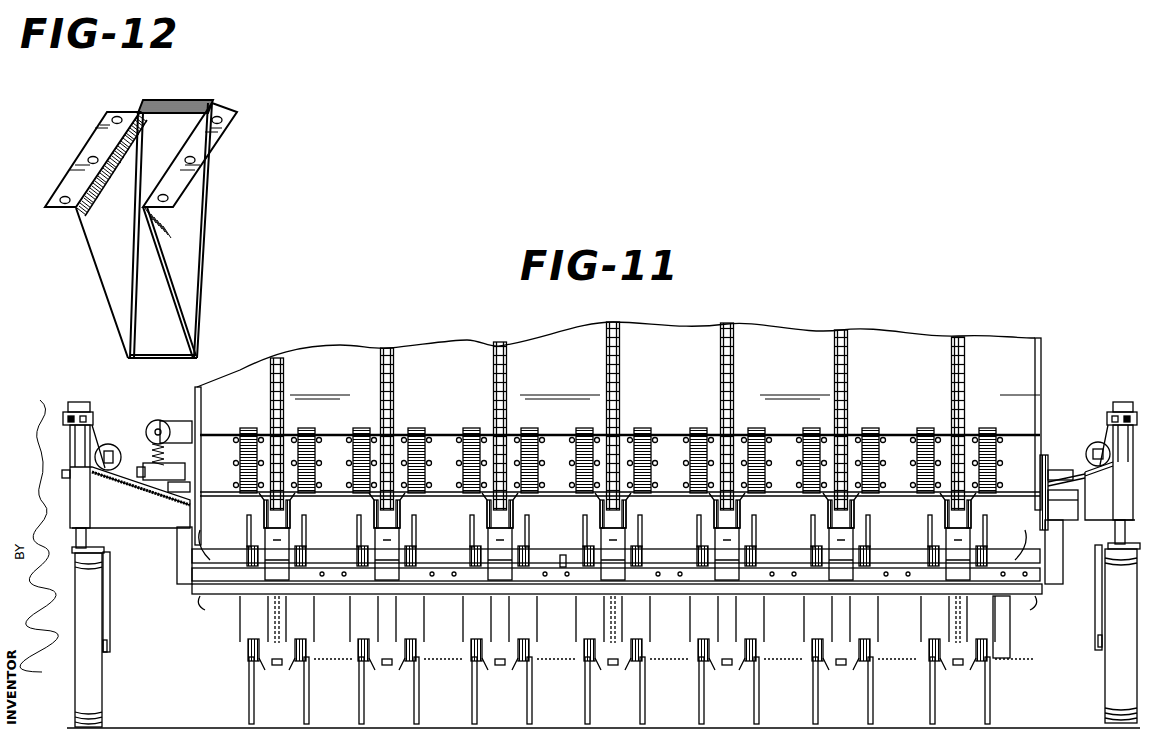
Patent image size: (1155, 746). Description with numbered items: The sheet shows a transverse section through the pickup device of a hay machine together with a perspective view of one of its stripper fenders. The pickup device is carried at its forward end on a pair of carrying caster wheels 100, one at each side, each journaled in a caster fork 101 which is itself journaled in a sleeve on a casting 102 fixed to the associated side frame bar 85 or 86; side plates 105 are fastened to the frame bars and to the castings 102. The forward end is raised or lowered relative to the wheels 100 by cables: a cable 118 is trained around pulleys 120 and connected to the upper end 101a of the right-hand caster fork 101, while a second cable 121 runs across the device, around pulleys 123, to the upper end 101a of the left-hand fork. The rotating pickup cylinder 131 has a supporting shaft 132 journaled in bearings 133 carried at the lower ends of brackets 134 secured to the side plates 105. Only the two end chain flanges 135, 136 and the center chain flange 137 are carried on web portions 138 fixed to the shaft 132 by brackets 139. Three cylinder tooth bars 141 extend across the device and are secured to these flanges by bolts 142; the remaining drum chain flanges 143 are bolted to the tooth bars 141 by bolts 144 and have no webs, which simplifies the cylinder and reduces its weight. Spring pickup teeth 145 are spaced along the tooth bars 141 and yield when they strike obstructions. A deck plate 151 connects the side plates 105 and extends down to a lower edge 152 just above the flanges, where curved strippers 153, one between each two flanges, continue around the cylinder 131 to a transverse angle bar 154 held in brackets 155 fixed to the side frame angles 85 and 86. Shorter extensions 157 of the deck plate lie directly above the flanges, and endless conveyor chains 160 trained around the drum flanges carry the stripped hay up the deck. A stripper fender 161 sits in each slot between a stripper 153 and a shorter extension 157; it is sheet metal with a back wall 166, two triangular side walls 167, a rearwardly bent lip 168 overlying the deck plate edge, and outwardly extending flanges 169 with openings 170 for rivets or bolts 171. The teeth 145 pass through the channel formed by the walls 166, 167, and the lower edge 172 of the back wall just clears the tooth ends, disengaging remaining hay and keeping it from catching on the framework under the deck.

In FIG. 11, the side frame bar 85 is at (1040, 470).
In FIG. 11, the side frame bar 86 is at (188, 468).
In FIG. 11, the carrying caster wheel 100 is at (100, 675).
In FIG. 11, the caster fork 101 is at (110, 606).
In FIG. 11, the upper end of caster fork 101a is at (85, 408).
In FIG. 11, the casting 102 is at (128, 518).
In FIG. 11, the side plate 105 is at (200, 400).
In FIG. 11, the cable 118 is at (135, 478).
In FIG. 11, the pulley 120 is at (105, 446).
In FIG. 11, the second cable 121 is at (1090, 470).
In FIG. 11, the pulley 123 is at (1097, 441).
In FIG. 11, the pickup cylinder 131 is at (1008, 670).
In FIG. 11, the supporting shaft 132 is at (232, 598).
In FIG. 11, the bearing 133 is at (205, 608).
In FIG. 11, the bracket 134 is at (205, 548).
In FIG. 11, the end chain flange 135 is at (300, 670).
In FIG. 11, the end chain flange 136 is at (945, 665).
In FIG. 11, the center chain flange 137 is at (600, 665).
In FIG. 11, the web portion 138 is at (634, 619).
In FIG. 11, the bracket 139 is at (265, 550).
In FIG. 11, the cylinder tooth bar 141 is at (452, 555).
In FIG. 11, the bolt 142 is at (735, 550).
In FIG. 11, the drum chain flange 143 is at (480, 668).
In FIG. 11, the bolt 144 is at (395, 665).
In FIG. 11, the spring pickup tooth 145 is at (700, 537).
In FIG. 11, the deck plate 151 is at (672, 362).
In FIG. 11, the lower edge of deck plate 152 is at (575, 434).
In FIG. 11, the stripper 153 is at (340, 435).
In FIG. 11, the angle bar 154 is at (340, 565).
In FIG. 11, the bracket 155 is at (180, 576).
In FIG. 11, the shorter extension 157 is at (303, 430).
In FIG. 11, the conveyor chain 160 is at (380, 360).
In FIG. 12, the stripper fender 161 is at (205, 236).
In FIG. 11, the stripper fender 161 is at (258, 430).
In FIG. 12, the back wall 166 is at (180, 130).
In FIG. 12, the side wall 167 is at (100, 283).
In FIG. 12, the lip portion 168 is at (190, 100).
In FIG. 11, the lip portion 168 is at (420, 440).
In FIG. 12, the flange portion 169 is at (93, 140).
In FIG. 12, the opening 170 is at (217, 117).
In FIG. 11, the rivet or bolt 171 is at (236, 485).
In FIG. 12, the lower edge of back wall 172 is at (170, 360).